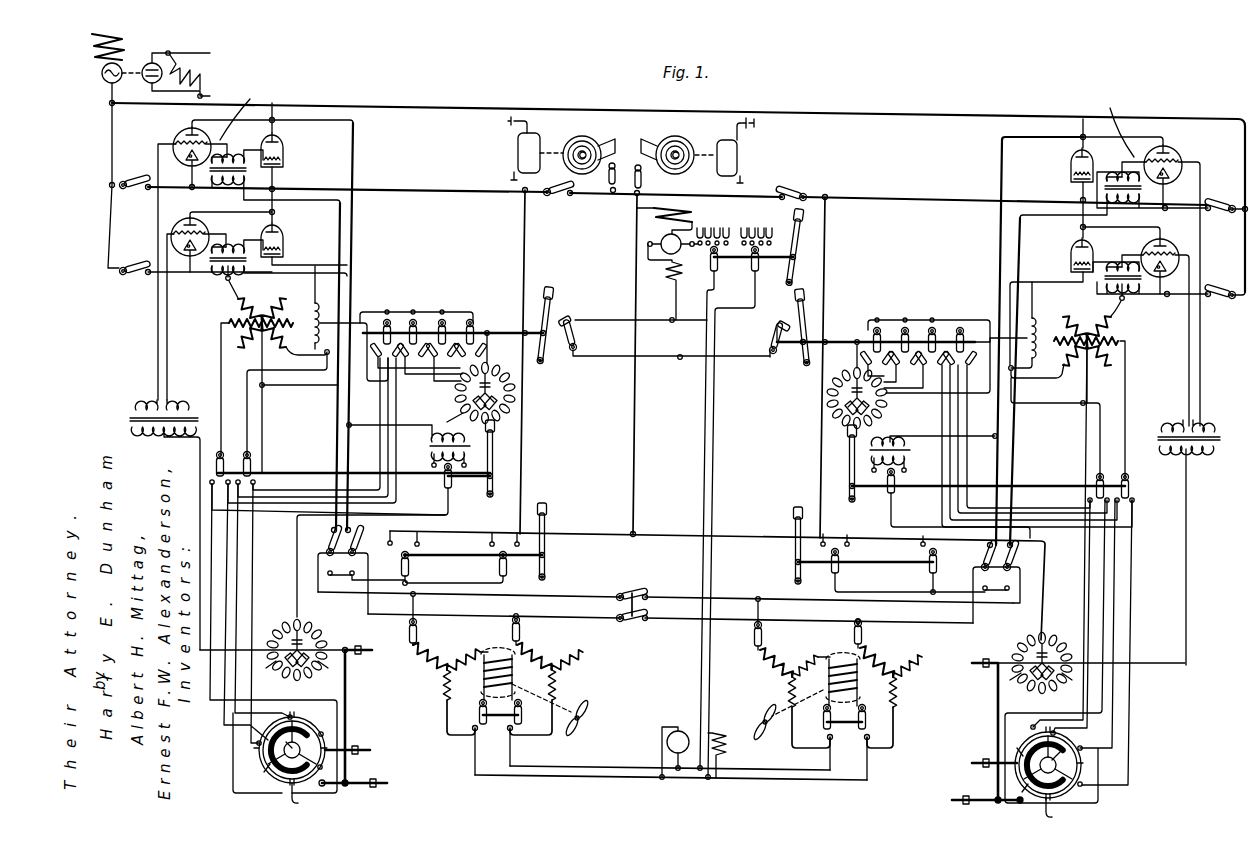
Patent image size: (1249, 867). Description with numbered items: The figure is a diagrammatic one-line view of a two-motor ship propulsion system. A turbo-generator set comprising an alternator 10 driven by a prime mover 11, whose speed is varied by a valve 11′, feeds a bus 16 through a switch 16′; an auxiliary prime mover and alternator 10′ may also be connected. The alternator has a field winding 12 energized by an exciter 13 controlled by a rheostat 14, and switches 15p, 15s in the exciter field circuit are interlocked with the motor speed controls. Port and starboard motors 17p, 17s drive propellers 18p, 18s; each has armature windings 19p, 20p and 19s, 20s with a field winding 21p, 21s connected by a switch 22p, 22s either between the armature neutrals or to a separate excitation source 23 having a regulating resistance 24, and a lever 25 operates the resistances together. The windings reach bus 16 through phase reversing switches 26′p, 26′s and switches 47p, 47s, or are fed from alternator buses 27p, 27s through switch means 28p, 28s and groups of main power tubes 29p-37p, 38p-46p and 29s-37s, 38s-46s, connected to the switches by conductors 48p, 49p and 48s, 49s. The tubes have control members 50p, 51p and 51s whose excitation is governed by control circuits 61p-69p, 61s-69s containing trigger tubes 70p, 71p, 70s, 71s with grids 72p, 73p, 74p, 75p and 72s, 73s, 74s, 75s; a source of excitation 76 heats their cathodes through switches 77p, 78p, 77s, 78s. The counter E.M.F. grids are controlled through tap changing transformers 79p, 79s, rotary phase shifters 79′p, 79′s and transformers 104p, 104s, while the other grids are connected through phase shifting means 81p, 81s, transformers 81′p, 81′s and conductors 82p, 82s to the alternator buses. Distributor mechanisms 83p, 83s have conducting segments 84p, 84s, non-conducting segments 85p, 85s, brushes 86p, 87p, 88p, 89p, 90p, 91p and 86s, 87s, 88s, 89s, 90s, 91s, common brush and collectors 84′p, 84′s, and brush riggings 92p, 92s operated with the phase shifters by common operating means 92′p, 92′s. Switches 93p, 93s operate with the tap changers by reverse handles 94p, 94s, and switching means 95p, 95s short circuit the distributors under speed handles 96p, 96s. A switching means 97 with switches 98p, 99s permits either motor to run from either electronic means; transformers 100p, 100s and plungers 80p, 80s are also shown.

The source of excitation 76 is at (138, 60).
The control circuit 61p-69p is at (249, 110).
The control circuit 61s-69s is at (1121, 123).
The control or trigger tube 71p is at (186, 124).
The control grid 74p is at (175, 137).
The control grid 75p is at (184, 161).
The switch 77p is at (137, 181).
The control or trigger tube 70p is at (175, 218).
The control grid 72p is at (206, 232).
The control grid 73p is at (186, 251).
The switch 78p is at (133, 275).
The transformer 100p is at (225, 183).
The group of main power tubes 38p-46p is at (284, 142).
The control member 51p is at (284, 161).
The group of main power tubes 29p-37p is at (298, 222).
The control member 50p is at (283, 244).
The transformer 81′p is at (289, 310).
The alternator bus 27p is at (455, 188).
The alternator bus 27s is at (930, 201).
The switch means 28p is at (558, 194).
The switch means 28s is at (803, 191).
The conductors 82p is at (523, 245).
The conductors 82s is at (822, 269).
The switching means 95p is at (428, 320).
The switching means 95s is at (924, 332).
The phase shifting means 81p is at (500, 382).
The phase shifting means 81s is at (844, 384).
The manually operated handle 96p is at (552, 319).
The manually operated handle 96s is at (798, 310).
The switch 15p is at (576, 338).
The switch 15s is at (766, 341).
The prime mover and alternator 10′ is at (553, 142).
The alternator 10 is at (684, 140).
The prime mover 11 is at (737, 157).
The valve 11′ is at (755, 125).
The switch 16′ is at (642, 180).
The bus 16 is at (637, 384).
The field winding 12 is at (664, 213).
The exciter 13 is at (673, 277).
The rheostat 14 is at (712, 227).
The regulating resistance 24 is at (753, 227).
The lever 25 is at (799, 241).
The transformer 104p is at (130, 416).
The transformer 104s is at (1160, 437).
The switch 93p is at (233, 463).
The switch 93s is at (1110, 473).
The conductors 48p is at (335, 409).
The conductors 49p is at (347, 409).
The conductors 48s is at (996, 455).
The conductors 49s is at (1005, 452).
The tap changing phase shifting transformer 79p is at (432, 442).
The relay plunger 80p is at (436, 465).
The manually operated handle 94p is at (497, 462).
The tap changing phase shifting transformer 79s is at (910, 452).
The relay plunger 80s is at (959, 504).
The manually operated handle 94s is at (846, 450).
The switching mechanism 47p is at (320, 550).
The switching mechanism 47s is at (1011, 556).
The phase reversing switch 26′p is at (467, 544).
The phase reversing switch 26′s is at (890, 550).
The switching means 97 is at (632, 589).
The rotary phase shifting means 79′p is at (314, 627).
The rotary phase shifting means 79′s is at (1047, 630).
The distributor mechanism 83p is at (296, 676).
The distributor mechanism 83s is at (1039, 689).
The switch 98p is at (408, 630).
The relay 99s is at (764, 630).
The motor 17p is at (499, 677).
The motor 17s is at (842, 684).
The armature winding 19p is at (438, 676).
The armature winding 20p is at (561, 674).
The field or exciting winding 21p is at (484, 669).
The propeller 18p is at (582, 710).
The switch 22p is at (501, 734).
The source of excitation 23 is at (679, 731).
The armature winding 19s is at (787, 679).
The armature winding 20s is at (897, 682).
The field or exciting winding 21s is at (854, 679).
The propeller 18s is at (762, 734).
The switch 22s is at (847, 744).
The conducting segment 84p is at (290, 784).
The brush 87p is at (299, 717).
The brush 88p is at (323, 731).
The brush 89p is at (322, 765).
The non-conducting segment 85p is at (262, 749).
The brush 86p is at (258, 737).
The common brush and collector 84′p is at (284, 746).
The brush 91p is at (264, 772).
The brush 90p is at (294, 794).
The brush rigging 92p is at (345, 721).
The common operating means 92′p is at (385, 784).
The conducting segment 84s is at (1066, 788).
The brush 87s is at (1056, 731).
The brush 88s is at (1082, 750).
The brush 89s is at (1082, 785).
The non-conducting segment 85s is at (1039, 739).
The brush 86s is at (1016, 747).
The common brush and collector 84′s is at (1064, 765).
The brush 91s is at (1028, 796).
The brush 90s is at (1060, 813).
The brush rigging 92s is at (1000, 778).
The common operating means 92′s is at (959, 798).
The control or trigger tube 71s is at (1174, 148).
The control grid 74s is at (1180, 155).
The control grid 75s is at (1170, 183).
The switch 77s is at (1226, 200).
The control or trigger tube 70s is at (1162, 243).
The control grid 72s is at (1148, 253).
The control grid 73s is at (1179, 261).
The switch 78s is at (1222, 299).
The transformer 100s is at (1149, 189).
The group of main power tubes 38s-46s is at (1071, 160).
The control member 51s is at (1073, 175).
The group of main power tubes 29s-37s is at (1070, 247).
The transformer 81′s is at (1045, 321).